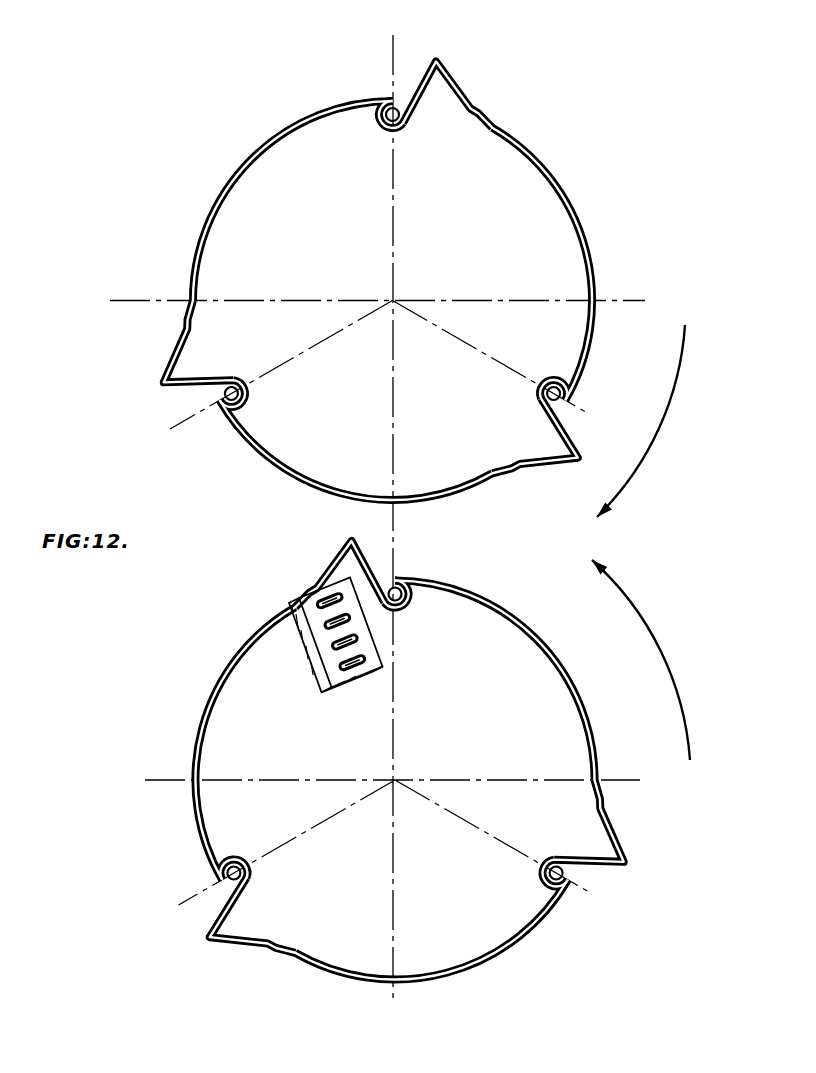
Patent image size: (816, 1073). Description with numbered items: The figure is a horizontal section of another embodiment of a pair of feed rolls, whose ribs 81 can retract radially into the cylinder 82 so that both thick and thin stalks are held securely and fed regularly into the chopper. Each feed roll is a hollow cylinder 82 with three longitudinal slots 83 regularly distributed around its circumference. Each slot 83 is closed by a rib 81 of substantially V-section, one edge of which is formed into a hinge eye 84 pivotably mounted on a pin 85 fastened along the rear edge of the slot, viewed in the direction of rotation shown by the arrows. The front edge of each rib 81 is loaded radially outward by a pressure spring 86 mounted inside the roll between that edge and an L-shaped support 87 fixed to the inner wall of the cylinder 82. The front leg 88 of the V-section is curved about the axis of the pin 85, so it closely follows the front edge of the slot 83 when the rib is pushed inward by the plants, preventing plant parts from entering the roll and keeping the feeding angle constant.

The rib 81 is at (453, 73).
The cylinder 82 is at (577, 207).
The longitudinal slot 83 is at (396, 104).
The hinge eye 84 is at (399, 131).
The pin 85 is at (386, 120).
The pressure spring 86 is at (361, 639).
The L-shaped support 87 is at (343, 683).
The front leg 88 is at (340, 554).